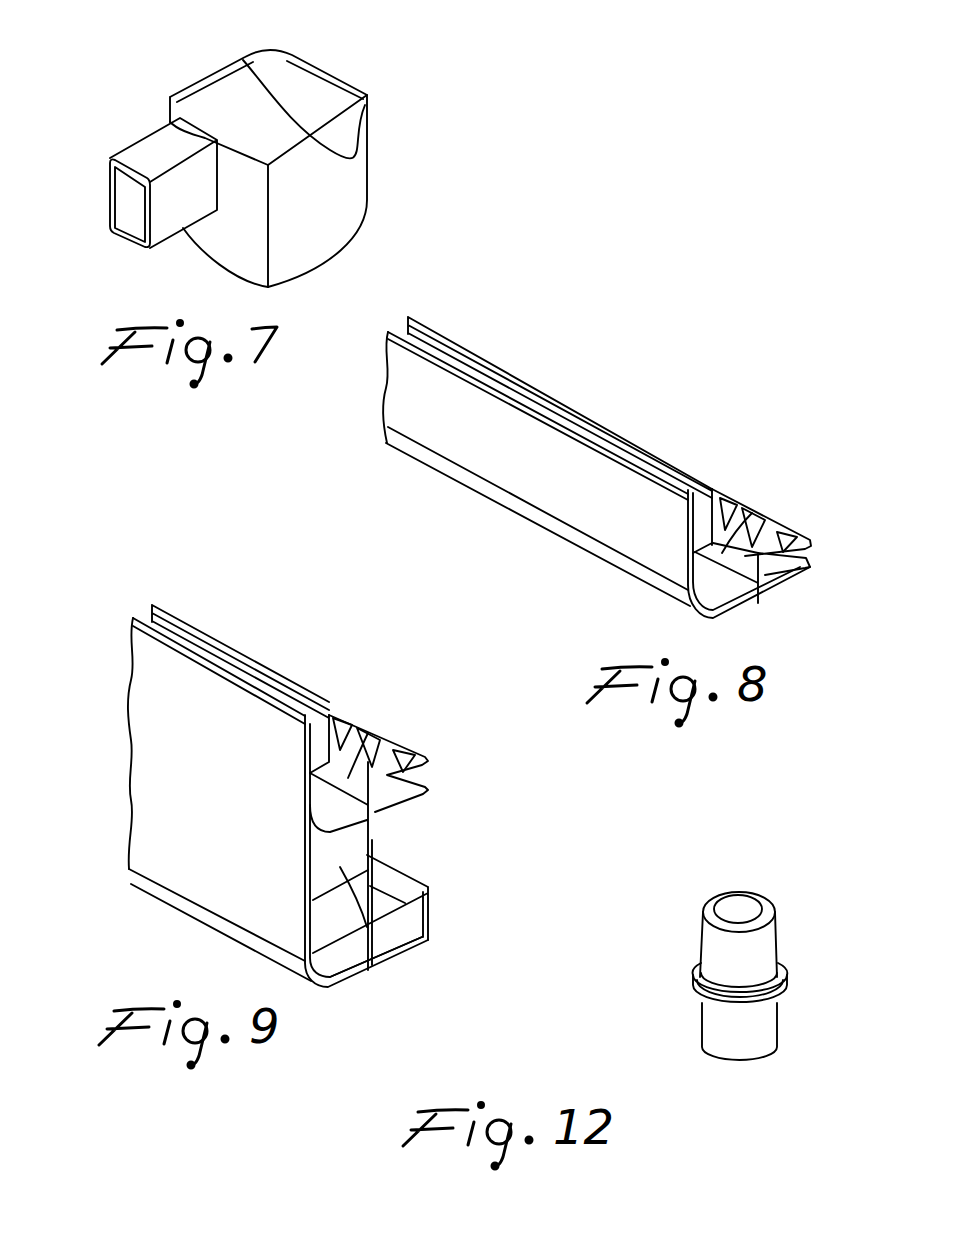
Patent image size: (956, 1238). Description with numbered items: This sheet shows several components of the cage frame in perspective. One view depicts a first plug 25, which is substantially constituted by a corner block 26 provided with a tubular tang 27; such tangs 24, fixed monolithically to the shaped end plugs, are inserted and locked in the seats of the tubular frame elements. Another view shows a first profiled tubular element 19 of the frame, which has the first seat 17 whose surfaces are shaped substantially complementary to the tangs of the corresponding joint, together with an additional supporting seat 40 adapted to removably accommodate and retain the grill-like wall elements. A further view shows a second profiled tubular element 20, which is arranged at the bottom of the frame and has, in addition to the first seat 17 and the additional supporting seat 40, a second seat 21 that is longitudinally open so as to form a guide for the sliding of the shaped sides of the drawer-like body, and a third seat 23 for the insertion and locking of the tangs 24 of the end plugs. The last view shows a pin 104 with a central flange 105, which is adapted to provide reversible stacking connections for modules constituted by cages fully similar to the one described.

In FIG. 7, the tang 24 is at (152, 148).
In FIG. 7, the first plug 25 is at (338, 259).
In FIG. 7, the corner block 26 is at (268, 70).
In FIG. 7, the tubular tang 27 is at (277, 128).
In FIG. 8, the first profiled tubular element 19 is at (510, 520).
In FIG. 8, the additional supporting seat 40 is at (698, 488).
In FIG. 9, the additional supporting seat 40 is at (318, 699).
In FIG. 8, the first seat 17 is at (725, 557).
In FIG. 9, the first seat 17 is at (348, 786).
In FIG. 9, the second profiled tubular element 20 is at (118, 734).
In FIG. 9, the second seat 21 is at (393, 835).
In FIG. 9, the third seat 23 is at (406, 952).
In FIG. 12, the pin 104 is at (743, 1069).
In FIG. 12, the central flange 105 is at (692, 975).